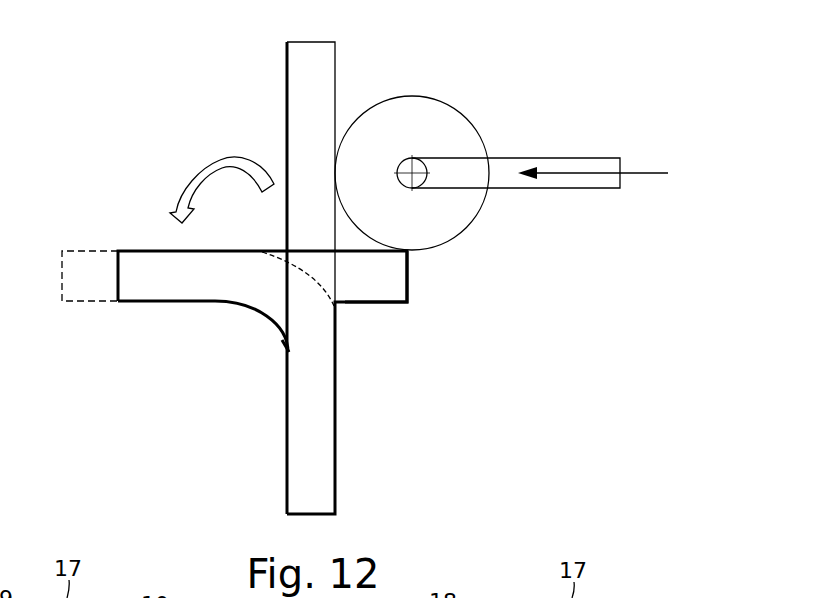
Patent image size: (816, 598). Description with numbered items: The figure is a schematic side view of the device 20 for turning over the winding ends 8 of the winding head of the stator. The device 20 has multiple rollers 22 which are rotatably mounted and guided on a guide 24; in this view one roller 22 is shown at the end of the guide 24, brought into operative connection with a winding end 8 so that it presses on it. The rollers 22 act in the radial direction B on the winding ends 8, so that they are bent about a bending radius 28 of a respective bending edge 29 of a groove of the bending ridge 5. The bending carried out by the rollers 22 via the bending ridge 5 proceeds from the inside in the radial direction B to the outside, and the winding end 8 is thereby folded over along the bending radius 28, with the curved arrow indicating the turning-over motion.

The bending ridge 5 is at (375, 290).
The winding ends 8 is at (312, 65).
The device for turning over the winding ends 20 is at (477, 137).
The rollers 22 is at (410, 118).
The guide 24 is at (558, 157).
The bending radius 28 is at (246, 303).
The bending edge 29 is at (285, 348).
The radial direction B is at (638, 172).